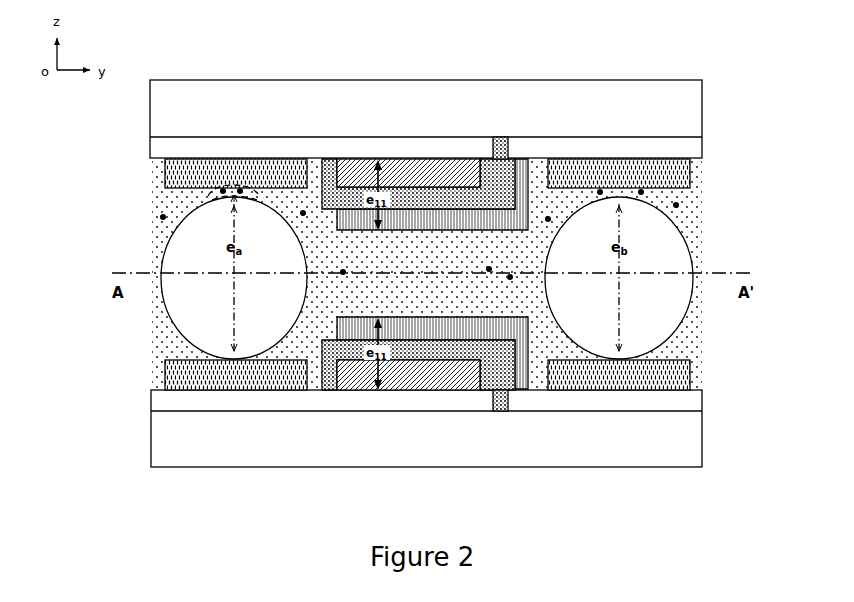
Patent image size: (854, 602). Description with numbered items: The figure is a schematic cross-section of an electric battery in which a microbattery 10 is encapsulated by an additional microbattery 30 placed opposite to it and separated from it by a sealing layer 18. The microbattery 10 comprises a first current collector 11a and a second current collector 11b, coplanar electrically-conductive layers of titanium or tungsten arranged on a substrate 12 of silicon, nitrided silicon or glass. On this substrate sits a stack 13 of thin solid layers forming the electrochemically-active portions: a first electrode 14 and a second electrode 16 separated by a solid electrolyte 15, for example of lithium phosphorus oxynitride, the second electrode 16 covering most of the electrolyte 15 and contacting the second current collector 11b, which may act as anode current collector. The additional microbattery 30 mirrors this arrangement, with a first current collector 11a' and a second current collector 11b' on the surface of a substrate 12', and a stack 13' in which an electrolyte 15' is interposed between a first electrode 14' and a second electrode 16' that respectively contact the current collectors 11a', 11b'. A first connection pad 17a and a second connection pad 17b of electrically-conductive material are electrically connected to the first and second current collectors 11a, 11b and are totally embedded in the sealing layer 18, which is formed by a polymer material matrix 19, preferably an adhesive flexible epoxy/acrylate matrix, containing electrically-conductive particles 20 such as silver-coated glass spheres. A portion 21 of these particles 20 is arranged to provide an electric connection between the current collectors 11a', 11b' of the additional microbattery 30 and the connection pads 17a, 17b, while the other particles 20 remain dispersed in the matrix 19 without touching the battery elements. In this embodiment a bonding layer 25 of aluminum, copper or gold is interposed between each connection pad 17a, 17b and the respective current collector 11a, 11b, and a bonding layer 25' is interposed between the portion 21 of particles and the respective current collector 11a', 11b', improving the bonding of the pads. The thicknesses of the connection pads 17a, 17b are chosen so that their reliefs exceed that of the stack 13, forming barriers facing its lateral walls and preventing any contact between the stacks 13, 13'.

The microbattery 10 is at (206, 489).
The first current collector 11a is at (256, 403).
The second current collector 11b is at (597, 404).
The substrate 12 is at (455, 439).
The first current collector 11a' is at (255, 151).
The second current collector 11b' is at (602, 151).
The substrate 12' is at (459, 108).
The stack 13 is at (453, 445).
The stack 13' is at (449, 105).
The first electrode 14 is at (408, 375).
The first electrode 14' is at (408, 173).
The electrolyte 15 is at (418, 365).
The electrolyte 15' is at (418, 184).
The second electrode 16 is at (432, 353).
The second electrode 16' is at (432, 194).
The first connection pad 17a is at (280, 339).
The second connection pad 17b is at (606, 339).
The sealing layer 18 is at (760, 212).
The polymer material matrix 19 is at (692, 233).
The electrically-conductive particles 20 is at (679, 205).
The portion of electrically-conductive particles 21 is at (165, 198).
The bonding layer 25 is at (422, 375).
The bonding layer 25' is at (426, 175).
The additional microbattery 30 is at (580, 62).